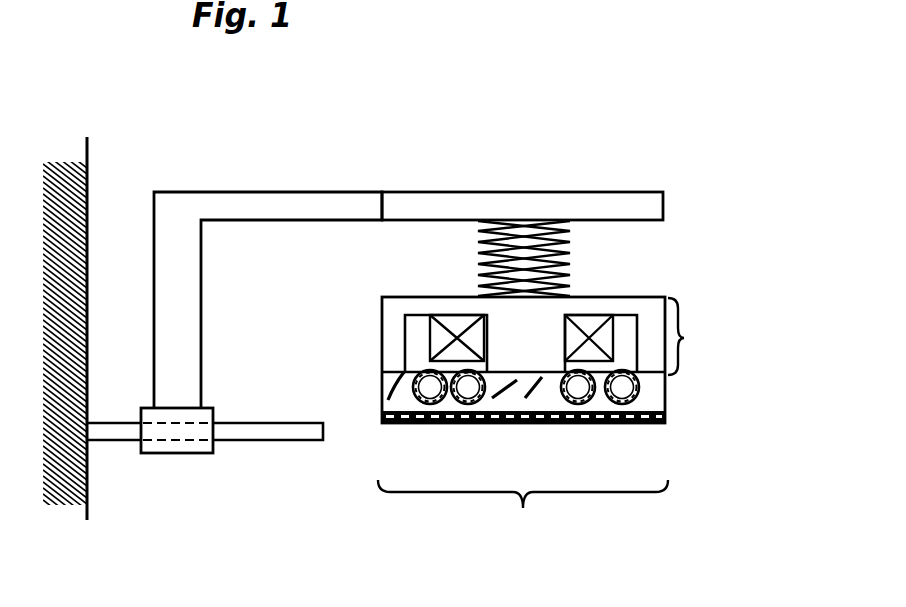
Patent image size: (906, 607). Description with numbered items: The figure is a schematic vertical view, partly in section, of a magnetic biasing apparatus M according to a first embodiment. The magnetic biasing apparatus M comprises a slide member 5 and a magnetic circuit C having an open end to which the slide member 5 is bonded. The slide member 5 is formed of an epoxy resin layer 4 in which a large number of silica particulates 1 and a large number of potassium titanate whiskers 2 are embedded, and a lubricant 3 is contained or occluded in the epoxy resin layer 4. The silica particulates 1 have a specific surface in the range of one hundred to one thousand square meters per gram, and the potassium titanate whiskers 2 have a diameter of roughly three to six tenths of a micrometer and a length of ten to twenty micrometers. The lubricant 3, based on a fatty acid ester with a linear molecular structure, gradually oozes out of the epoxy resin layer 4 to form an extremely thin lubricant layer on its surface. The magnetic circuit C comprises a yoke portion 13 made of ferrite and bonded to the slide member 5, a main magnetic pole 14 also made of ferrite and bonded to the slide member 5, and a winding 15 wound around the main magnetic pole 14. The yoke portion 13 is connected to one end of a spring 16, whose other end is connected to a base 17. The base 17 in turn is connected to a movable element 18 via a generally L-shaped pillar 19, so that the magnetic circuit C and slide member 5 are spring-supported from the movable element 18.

The silica particulates 1 is at (417, 423).
The potassium titanate whiskers 2 is at (495, 400).
The lubricant 3 is at (557, 425).
The epoxy resin layer 4 is at (545, 397).
The slide member 5 is at (523, 515).
The yoke portion 13 is at (648, 317).
The main magnetic pole 14 is at (523, 367).
The winding 15 is at (427, 317).
The spring 16 is at (478, 267).
The base 17 is at (537, 195).
The movable element 18 is at (145, 407).
The pillar 19 is at (262, 192).
The magnetic biasing apparatus M is at (686, 195).
The magnetic circuit C is at (690, 336).